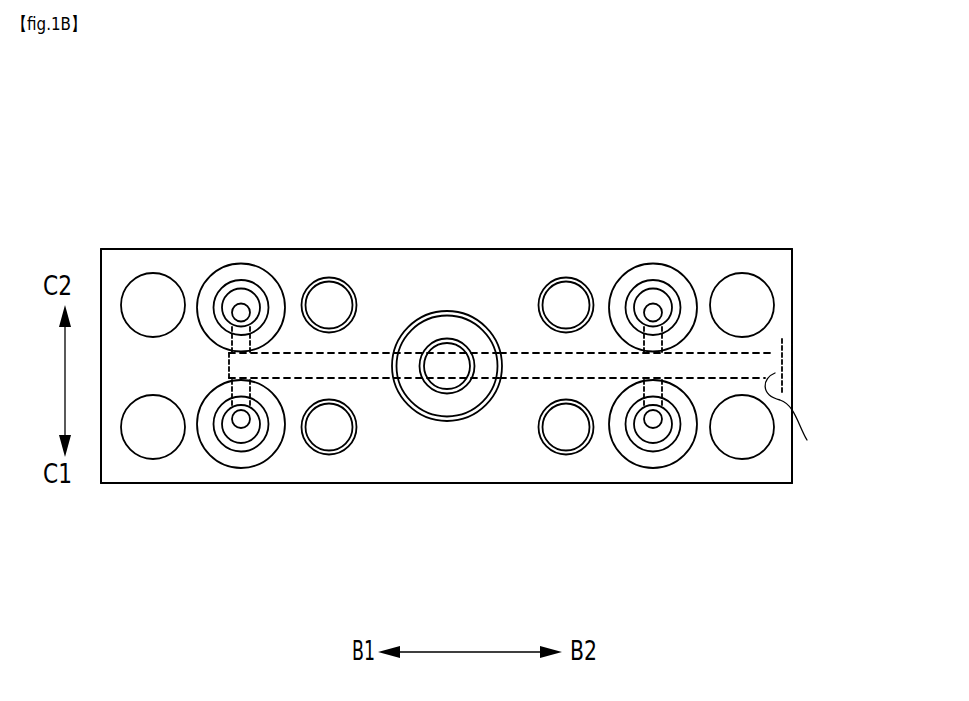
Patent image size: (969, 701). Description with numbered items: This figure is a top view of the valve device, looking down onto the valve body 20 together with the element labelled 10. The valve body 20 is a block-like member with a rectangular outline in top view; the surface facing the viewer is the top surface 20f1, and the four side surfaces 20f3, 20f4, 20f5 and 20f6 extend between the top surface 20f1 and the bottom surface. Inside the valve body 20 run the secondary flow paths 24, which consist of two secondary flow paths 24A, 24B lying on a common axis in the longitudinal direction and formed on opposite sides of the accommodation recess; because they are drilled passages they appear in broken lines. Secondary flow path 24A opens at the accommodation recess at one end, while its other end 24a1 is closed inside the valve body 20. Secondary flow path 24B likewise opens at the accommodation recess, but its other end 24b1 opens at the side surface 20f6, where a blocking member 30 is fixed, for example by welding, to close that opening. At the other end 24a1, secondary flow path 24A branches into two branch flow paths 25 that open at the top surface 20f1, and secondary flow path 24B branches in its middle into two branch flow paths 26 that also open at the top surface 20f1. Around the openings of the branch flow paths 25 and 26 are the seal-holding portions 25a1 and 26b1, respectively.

The cylindrical element / boss 10 is at (482, 326).
The valve body 20 is at (478, 378).
The top surface 20f1 is at (500, 450).
The side surface 20f3 is at (163, 484).
The side surface 20f4 is at (140, 249).
The side surface 20f5 is at (100, 462).
The side surface 20f6 is at (793, 453).
The secondary flow paths 24 is at (568, 344).
The secondary flow path 24A is at (347, 353).
The secondary flow path 24B is at (528, 368).
The other end of secondary flow path 24A 24a1 is at (243, 366).
The other end of secondary flow path 24B 24b1 is at (807, 440).
The branch flow paths 25 is at (247, 338).
The seal-holding portion 25a1 is at (241, 305).
The branch flow paths 26 is at (670, 340).
The seal-holding portion 26b1 is at (653, 290).
The blocking member 30 is at (793, 347).